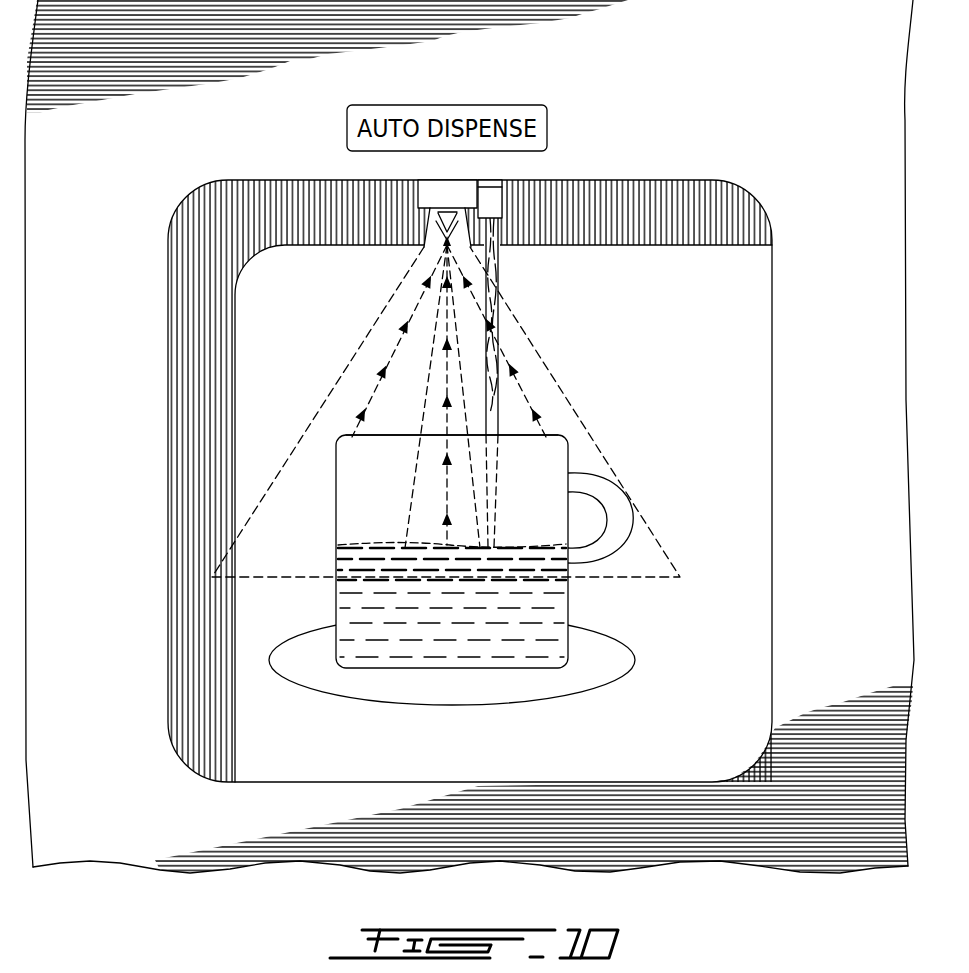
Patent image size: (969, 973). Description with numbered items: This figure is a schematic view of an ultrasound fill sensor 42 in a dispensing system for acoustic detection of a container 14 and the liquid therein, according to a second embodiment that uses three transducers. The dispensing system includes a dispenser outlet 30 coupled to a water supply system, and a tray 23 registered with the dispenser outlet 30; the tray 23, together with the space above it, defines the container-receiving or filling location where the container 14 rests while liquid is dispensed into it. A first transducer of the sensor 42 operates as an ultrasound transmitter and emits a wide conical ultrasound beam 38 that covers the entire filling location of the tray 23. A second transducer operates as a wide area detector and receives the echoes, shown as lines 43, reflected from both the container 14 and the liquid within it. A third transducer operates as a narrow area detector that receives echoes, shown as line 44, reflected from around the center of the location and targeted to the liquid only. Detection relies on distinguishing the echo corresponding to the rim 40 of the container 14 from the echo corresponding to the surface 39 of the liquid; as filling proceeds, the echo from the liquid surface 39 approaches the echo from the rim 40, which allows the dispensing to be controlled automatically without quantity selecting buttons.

The container 14 is at (585, 600).
The tray 23 is at (400, 690).
The dispenser outlet 30 is at (495, 206).
The wide conical ultrasound beam 38 is at (557, 410).
The surface of the liquid 39 is at (372, 548).
The rim of the container 40 is at (373, 437).
The ultrasound fill sensor 42 is at (415, 196).
The echo lines reflected from container and liquid 43 is at (503, 350).
The echo line reflected from the liquid 44 is at (447, 417).